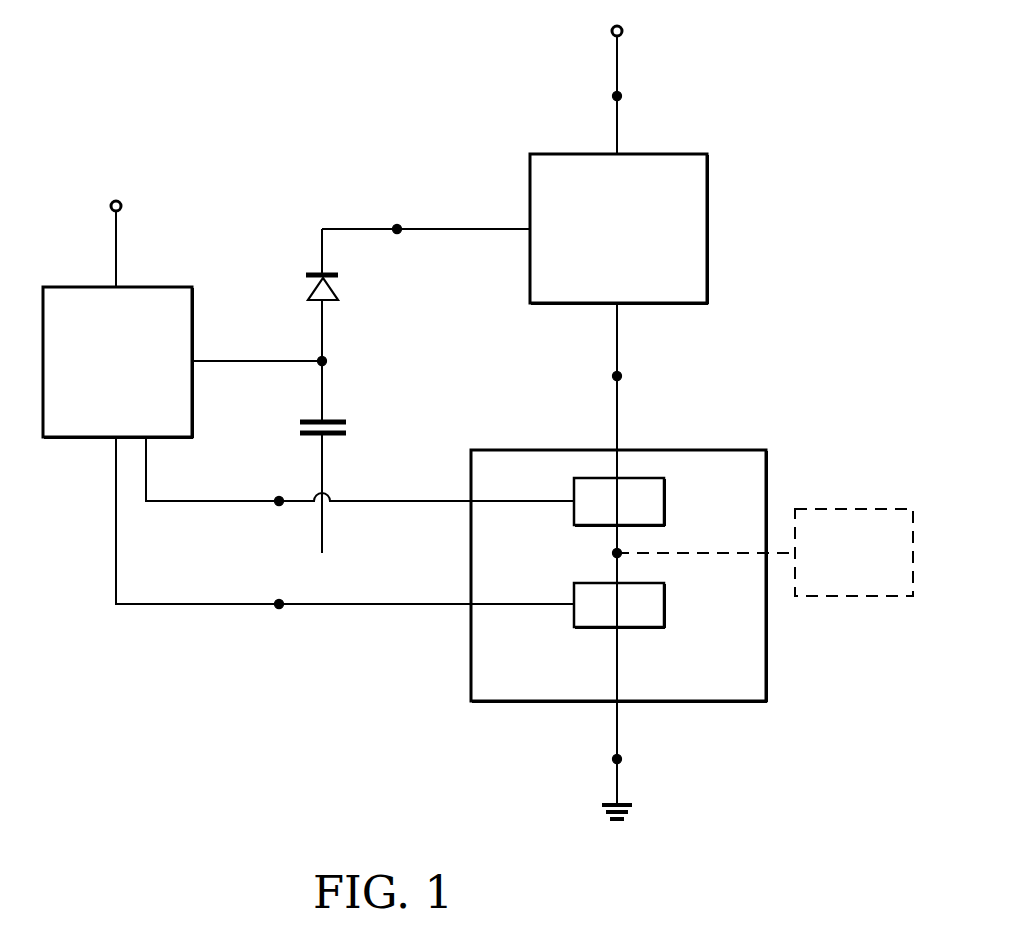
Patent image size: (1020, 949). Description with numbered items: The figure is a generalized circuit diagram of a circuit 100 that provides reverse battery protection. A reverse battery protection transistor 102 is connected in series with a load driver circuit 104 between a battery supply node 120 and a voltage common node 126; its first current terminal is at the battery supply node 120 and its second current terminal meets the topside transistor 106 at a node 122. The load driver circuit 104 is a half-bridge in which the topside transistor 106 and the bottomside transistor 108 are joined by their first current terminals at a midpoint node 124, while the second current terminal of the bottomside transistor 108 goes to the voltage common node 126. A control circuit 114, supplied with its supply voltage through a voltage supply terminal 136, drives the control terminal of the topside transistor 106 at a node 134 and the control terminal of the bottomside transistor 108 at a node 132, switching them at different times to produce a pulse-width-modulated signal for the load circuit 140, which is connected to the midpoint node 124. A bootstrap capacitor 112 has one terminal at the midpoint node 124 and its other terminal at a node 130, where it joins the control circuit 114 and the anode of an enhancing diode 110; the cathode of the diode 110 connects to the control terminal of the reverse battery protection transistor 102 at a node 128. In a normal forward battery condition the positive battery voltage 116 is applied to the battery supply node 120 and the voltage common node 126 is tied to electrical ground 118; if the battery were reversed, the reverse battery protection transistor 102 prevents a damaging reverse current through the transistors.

The circuit 100 is at (401, 832).
The reverse battery protection transistor 102 is at (559, 153).
The load driver circuit 104 is at (529, 450).
The topside transistor T1 106 is at (665, 500).
The bottomside transistor T2 108 is at (665, 603).
The enhancing diode DE1 110 is at (312, 272).
The bootstrap capacitor CBS1 112 is at (306, 419).
The control circuit 114 is at (74, 287).
The positive voltage VBAT 116 is at (623, 31).
The electrical ground 118 is at (632, 812).
The battery supply node 120 is at (622, 96).
The node 122 is at (614, 377).
The midpoint node 124 is at (616, 553).
The voltage common node 126 is at (622, 759).
The node 128 is at (407, 228).
The node 130 is at (327, 361).
The node 132 is at (279, 604).
The node 134 is at (279, 501).
The voltage supply terminal 136 is at (122, 206).
The load circuit 140 is at (862, 509).